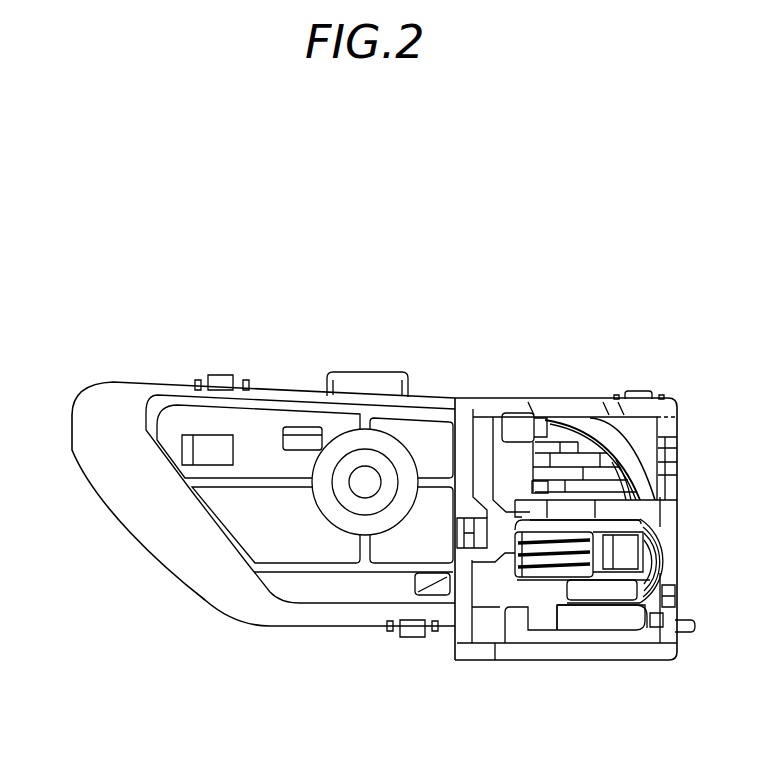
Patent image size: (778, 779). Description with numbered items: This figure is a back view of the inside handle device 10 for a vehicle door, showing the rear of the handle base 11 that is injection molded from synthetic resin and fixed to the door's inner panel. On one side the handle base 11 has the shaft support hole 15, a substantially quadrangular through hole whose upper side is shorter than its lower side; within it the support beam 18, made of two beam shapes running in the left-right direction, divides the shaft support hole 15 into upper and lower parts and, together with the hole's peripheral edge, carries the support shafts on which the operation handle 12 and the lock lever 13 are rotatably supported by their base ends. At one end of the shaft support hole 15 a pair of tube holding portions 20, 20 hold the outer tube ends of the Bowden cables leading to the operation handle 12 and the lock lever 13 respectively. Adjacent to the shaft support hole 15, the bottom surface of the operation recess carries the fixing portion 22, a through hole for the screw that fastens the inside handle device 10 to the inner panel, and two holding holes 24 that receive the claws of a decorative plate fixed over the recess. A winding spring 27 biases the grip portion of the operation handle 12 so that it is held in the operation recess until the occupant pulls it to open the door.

The inside handle device 10 is at (606, 363).
The handle base 11 is at (268, 386).
The operation handle 12 is at (600, 622).
The lock lever 13 is at (557, 437).
The shaft support hole 15 is at (511, 456).
The support beam 18 is at (641, 512).
The tube holding portion 20 is at (673, 453).
The fixing portion 22 is at (362, 486).
The holding hole 24 is at (210, 445).
The winding spring 27 is at (557, 572).